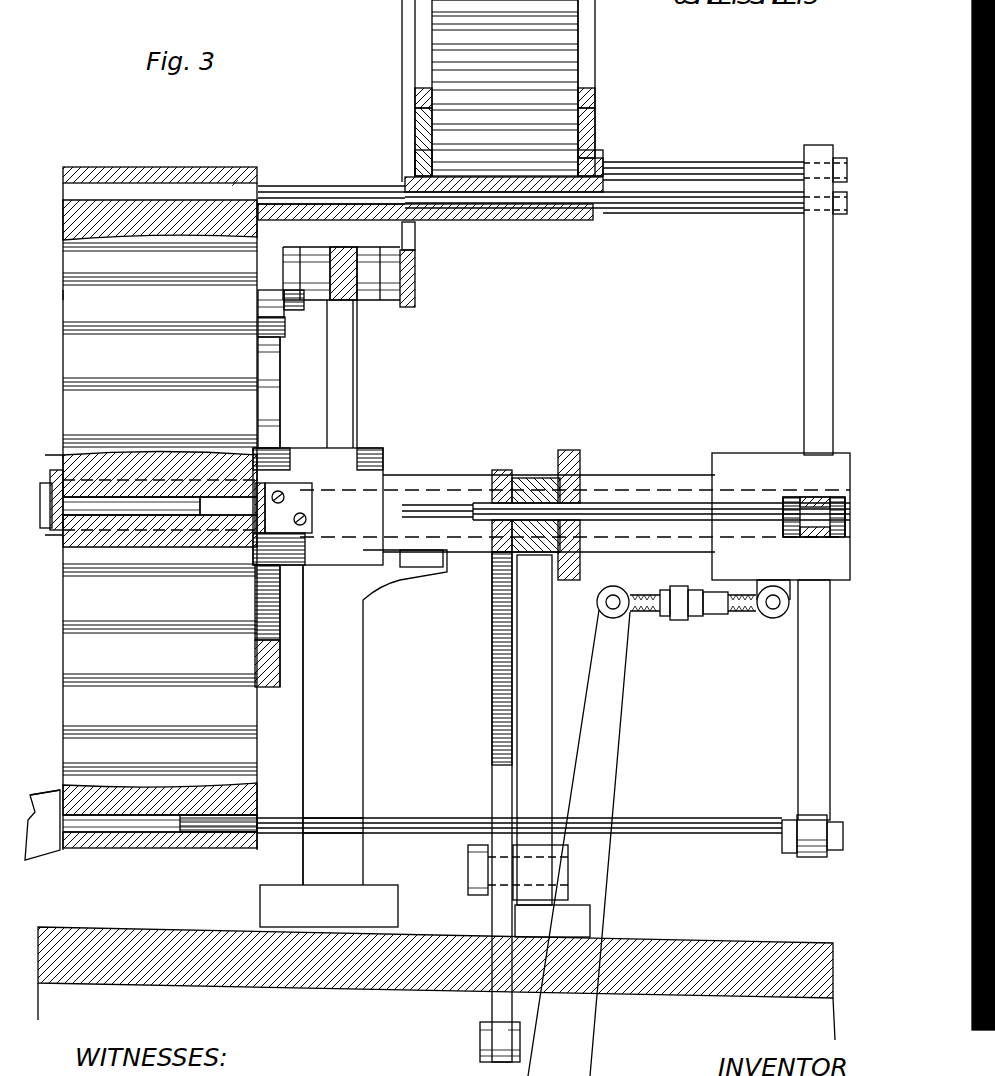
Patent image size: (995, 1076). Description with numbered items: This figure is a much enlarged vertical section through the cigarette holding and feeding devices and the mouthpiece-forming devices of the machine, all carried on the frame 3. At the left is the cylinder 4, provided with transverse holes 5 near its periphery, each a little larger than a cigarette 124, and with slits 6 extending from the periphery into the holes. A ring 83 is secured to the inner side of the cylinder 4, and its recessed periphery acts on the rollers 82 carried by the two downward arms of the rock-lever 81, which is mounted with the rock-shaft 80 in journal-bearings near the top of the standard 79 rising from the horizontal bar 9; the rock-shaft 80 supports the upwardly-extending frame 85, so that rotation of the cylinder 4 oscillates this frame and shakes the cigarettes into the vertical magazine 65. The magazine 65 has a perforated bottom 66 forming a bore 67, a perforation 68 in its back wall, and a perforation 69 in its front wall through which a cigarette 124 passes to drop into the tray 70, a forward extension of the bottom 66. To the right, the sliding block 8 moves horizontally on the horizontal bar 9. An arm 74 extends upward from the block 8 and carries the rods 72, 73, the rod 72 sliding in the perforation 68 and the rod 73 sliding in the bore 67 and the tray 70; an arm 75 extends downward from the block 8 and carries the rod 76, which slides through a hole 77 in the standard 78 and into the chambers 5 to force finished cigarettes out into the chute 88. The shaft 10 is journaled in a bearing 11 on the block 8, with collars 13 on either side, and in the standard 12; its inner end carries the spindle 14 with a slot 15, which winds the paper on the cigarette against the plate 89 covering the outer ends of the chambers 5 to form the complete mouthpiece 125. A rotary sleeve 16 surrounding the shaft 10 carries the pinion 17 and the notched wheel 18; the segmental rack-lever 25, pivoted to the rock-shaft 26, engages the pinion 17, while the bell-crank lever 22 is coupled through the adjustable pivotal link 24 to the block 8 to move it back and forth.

The frame 3 is at (190, 933).
The cylinder 4 is at (185, 358).
The transverse holes 5 is at (208, 186).
The slits 6 is at (63, 280).
The sliding block 8 is at (762, 460).
The horizontal bar 9 is at (618, 480).
The shaft 10 is at (648, 508).
The bearing 11 is at (800, 495).
The standard 12 is at (535, 730).
The collars 13 is at (790, 540).
The spindle 14 is at (460, 508).
The slot 15 is at (432, 505).
The rotary sleeve 16 is at (535, 478).
The pinion 17 is at (497, 472).
The wheel 18 is at (570, 455).
The bell-crank lever 22 is at (579, 831).
The adjustable pivotal link 24 is at (702, 622).
The segmental rack-lever 25 is at (490, 665).
The rock-shaft 26 is at (560, 856).
The magazine 65 is at (597, 115).
The bottom 66 is at (527, 222).
The bore 67 is at (593, 222).
The perforation 68 is at (590, 165).
The perforation 69 is at (420, 165).
The tray 70 is at (336, 228).
The rod 72 is at (715, 160).
The rod 73 is at (727, 214).
The arm 74 is at (806, 335).
The arm 75 is at (800, 673).
The rod 76 is at (718, 822).
The hole 77 is at (378, 815).
The standard 78 is at (353, 738).
The standard 79 is at (358, 395).
The rock-shaft 80 is at (290, 276).
The rock-lever 81 is at (300, 318).
The roller 82 is at (282, 328).
The ring 83 is at (280, 405).
The upwardly-extending frame 85 is at (410, 70).
The chute 88 is at (41, 818).
The plate 89 is at (45, 483).
The cigarette 124 is at (70, 515).
The complete mouthpiece 125 is at (222, 833).